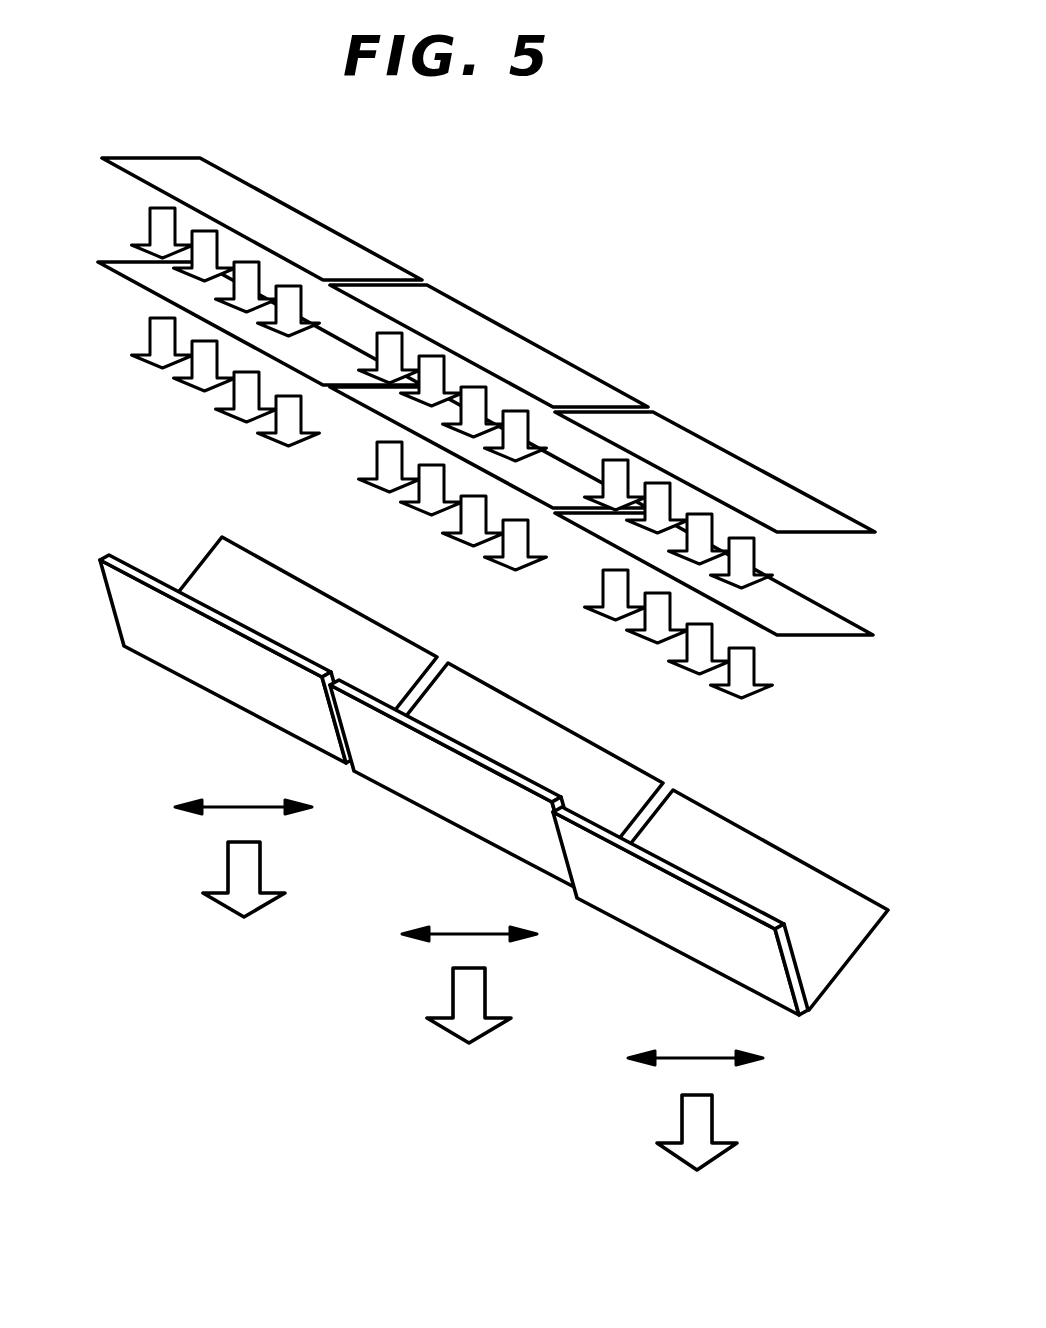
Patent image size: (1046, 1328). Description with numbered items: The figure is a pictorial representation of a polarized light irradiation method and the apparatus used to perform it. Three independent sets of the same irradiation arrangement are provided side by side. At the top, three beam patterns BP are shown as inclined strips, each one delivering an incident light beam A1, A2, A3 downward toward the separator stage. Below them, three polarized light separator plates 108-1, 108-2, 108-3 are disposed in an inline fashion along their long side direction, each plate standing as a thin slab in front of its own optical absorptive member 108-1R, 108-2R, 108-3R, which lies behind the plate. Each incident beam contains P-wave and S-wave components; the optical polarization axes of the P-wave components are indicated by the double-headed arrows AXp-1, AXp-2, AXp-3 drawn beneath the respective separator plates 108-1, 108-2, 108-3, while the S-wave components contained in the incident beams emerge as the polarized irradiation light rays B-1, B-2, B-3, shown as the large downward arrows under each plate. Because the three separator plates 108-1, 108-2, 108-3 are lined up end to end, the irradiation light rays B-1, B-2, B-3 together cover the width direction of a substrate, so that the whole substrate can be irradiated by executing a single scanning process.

The beam pattern BP is at (312, 217).
The incident light beam A1 is at (150, 334).
The incident light beam A2 is at (377, 459).
The incident light beam A3 is at (603, 586).
The polarized light separator plate 108-1 is at (200, 686).
The optical absorptive member 108-1R is at (330, 593).
The polarized light separator plate 108-2 is at (423, 807).
The optical absorptive member 108-2R is at (555, 722).
The polarized light separator plate 108-3 is at (653, 938).
The optical absorptive member 108-3R is at (787, 847).
The optical polarization axis of P-wave component AXp-1 is at (230, 806).
The optical polarization axis of P-wave component AXp-2 is at (455, 933).
The optical polarization axis of P-wave component AXp-3 is at (683, 1056).
The polarized light ray of S-wave component B-1 is at (228, 870).
The polarized light ray of S-wave component B-2 is at (453, 998).
The polarized light ray of S-wave component B-3 is at (682, 1123).